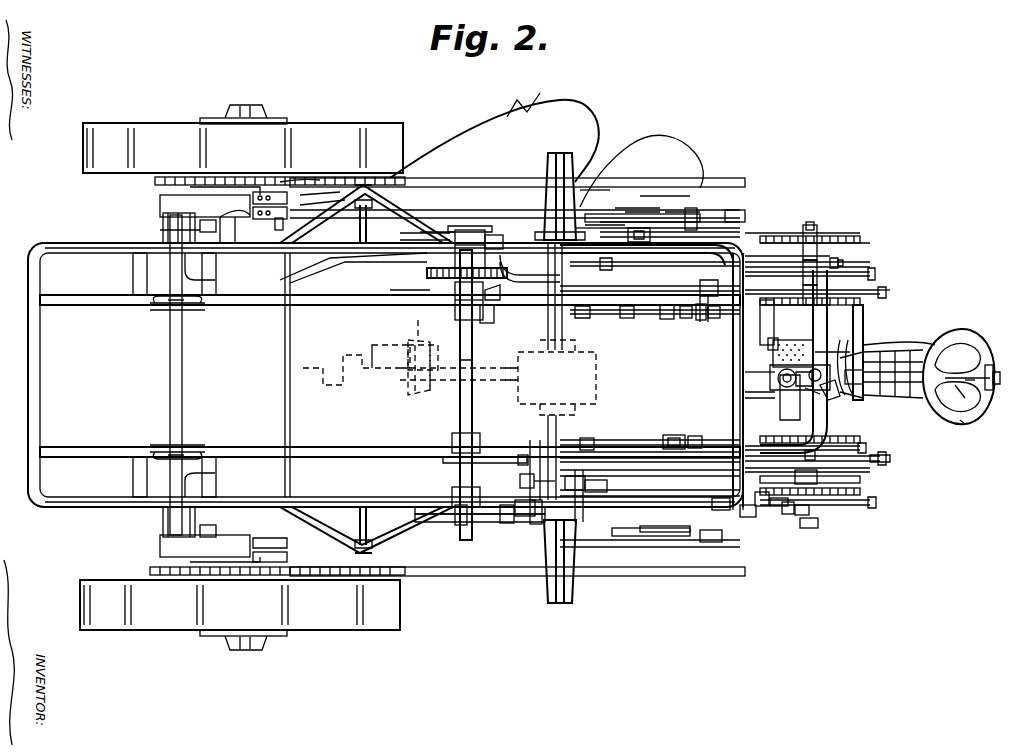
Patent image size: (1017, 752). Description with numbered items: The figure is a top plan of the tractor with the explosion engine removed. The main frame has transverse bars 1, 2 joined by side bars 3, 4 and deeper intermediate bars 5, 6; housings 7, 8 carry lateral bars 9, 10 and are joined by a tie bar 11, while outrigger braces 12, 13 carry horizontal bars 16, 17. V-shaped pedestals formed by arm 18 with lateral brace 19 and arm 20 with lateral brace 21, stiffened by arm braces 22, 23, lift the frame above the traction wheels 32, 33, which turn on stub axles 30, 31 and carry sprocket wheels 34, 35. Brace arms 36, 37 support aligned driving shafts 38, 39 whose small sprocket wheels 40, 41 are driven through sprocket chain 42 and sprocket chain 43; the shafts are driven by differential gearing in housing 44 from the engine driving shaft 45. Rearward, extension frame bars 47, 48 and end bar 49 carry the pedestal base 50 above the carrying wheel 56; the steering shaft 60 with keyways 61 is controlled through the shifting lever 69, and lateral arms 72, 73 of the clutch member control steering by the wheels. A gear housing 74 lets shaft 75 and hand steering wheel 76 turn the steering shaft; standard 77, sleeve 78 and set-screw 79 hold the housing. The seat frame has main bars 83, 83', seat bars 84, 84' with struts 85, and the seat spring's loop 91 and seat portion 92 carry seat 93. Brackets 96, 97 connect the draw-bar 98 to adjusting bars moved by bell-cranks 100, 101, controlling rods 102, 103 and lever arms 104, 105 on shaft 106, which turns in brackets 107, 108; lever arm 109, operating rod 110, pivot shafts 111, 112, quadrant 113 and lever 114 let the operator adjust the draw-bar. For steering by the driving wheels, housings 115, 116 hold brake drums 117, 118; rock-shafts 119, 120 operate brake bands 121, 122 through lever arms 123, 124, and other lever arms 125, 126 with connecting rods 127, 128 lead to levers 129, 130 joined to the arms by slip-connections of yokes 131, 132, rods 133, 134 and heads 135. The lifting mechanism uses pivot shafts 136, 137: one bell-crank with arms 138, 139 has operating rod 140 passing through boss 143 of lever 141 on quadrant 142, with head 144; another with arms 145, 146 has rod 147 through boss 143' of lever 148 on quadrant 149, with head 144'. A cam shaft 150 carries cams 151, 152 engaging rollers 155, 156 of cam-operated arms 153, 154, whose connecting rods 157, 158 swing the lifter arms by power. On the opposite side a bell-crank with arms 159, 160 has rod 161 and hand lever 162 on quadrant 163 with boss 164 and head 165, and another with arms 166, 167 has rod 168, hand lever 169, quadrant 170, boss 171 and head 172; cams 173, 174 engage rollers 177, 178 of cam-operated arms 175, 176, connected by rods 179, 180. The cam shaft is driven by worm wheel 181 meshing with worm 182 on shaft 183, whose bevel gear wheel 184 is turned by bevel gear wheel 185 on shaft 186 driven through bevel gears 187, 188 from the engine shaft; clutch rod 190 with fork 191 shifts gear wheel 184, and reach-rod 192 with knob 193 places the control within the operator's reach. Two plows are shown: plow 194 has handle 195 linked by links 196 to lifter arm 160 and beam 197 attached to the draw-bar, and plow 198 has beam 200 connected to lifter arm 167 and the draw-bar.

The transverse bar 1 is at (30, 380).
The transverse bar 2 is at (800, 368).
The side bar 3 is at (104, 246).
The side bar 4 is at (104, 508).
The intermediate bar 5 is at (112, 306).
The intermediate bar 6 is at (112, 447).
The housing 7 is at (133, 273).
The housing 8 is at (133, 478).
The lateral bar 9 is at (163, 226).
The lateral bar 10 is at (163, 527).
The tie bar 11 is at (170, 380).
The outrigger brace 12 is at (300, 233).
The outrigger brace 13 is at (395, 545).
The horizontal bar 16 is at (360, 225).
The horizontal bar 17 is at (360, 520).
The pedestal arm 18 is at (230, 192).
The lateral brace 19 is at (195, 267).
The pedestal arm 20 is at (195, 565).
The lateral brace 21 is at (195, 483).
The arm brace 22 is at (320, 200).
The arm brace 23 is at (300, 555).
The stub axle 30 is at (235, 185).
The stub axle 31 is at (240, 565).
The traction wheel 32 is at (83, 152).
The traction wheel 33 is at (112, 630).
The sprocket wheel 34 is at (190, 180).
The sprocket wheel 35 is at (180, 580).
The brace arm 36 is at (575, 165).
The brace arm 37 is at (576, 584).
The driving shaft 38 is at (552, 325).
The driving shaft 39 is at (548, 433).
The small sprocket wheel 40 is at (595, 185).
The small sprocket wheel 41 is at (578, 522).
The sprocket chain 42 is at (427, 178).
The sprocket chain 43 is at (427, 576).
The housing 44 is at (596, 376).
The driving shaft 45 is at (387, 385).
The extension frame bar 47 is at (795, 340).
The extension frame bar 48 is at (800, 420).
The transverse end bar 49 is at (828, 398).
The pedestal base 50 is at (796, 378).
The carrying wheel 56 is at (895, 355).
The steering shaft 60 is at (778, 378).
The keyways 61 is at (810, 382).
The shifting and controlling lever 69 is at (860, 402).
The lateral arm 72 is at (790, 330).
The lateral arm 73 is at (785, 420).
The gear housing 74 is at (770, 345).
The shaft 75 is at (845, 380).
The steering wheel 76 is at (862, 325).
The standard 77 is at (865, 352).
The sleeve 78 is at (925, 340).
The set-screw 79 is at (820, 392).
The main bar 83 is at (906, 358).
The main bar 83' is at (883, 395).
The seat bar 84 is at (968, 370).
The seat bar 84' is at (987, 429).
The spacing struts 85 is at (998, 375).
The loop 91 is at (985, 365).
The seat portion 92 is at (960, 400).
The seat 93 is at (970, 424).
The bracket 96 is at (270, 228).
The bracket 97 is at (270, 558).
The draw-bar 98 is at (283, 368).
The bell-crank 100 is at (200, 530).
The bell-crank 101 is at (160, 200).
The controlling rod 102 is at (210, 550).
The controlling rod 103 is at (215, 226).
The lever arm 104 is at (720, 510).
The lever arm 105 is at (735, 210).
The shaft 106 is at (760, 372).
The bracket 107 is at (775, 240).
The bracket 108 is at (762, 505).
The lever arm 109 is at (748, 520).
The operating rod 110 is at (780, 505).
The pivot shaft 111 is at (830, 258).
The pivot shaft 112 is at (830, 480).
The quadrant 113 is at (830, 472).
The lever 114 is at (810, 455).
The housing 115 is at (605, 265).
The housing 116 is at (525, 481).
The brake drum 117 is at (585, 225).
The brake drum 118 is at (540, 470).
The rock-shaft 119 is at (590, 215).
The rock-shaft 120 is at (575, 490).
The brake band 121 is at (490, 326).
The brake band 122 is at (535, 522).
The lever arm 123 is at (620, 215).
The lever arm 124 is at (590, 545).
The lever arm 125 is at (640, 320).
The lever arm 126 is at (585, 440).
The connecting rod 127 is at (618, 312).
The connecting rod 128 is at (600, 458).
The lever 129 is at (668, 322).
The lever 130 is at (675, 442).
The yoke 131 is at (695, 322).
The yoke 132 is at (698, 442).
The rod 133 is at (715, 325).
The rod 134 is at (740, 395).
The head 135 is at (700, 322).
The pivot shaft 136 is at (710, 545).
The pivot shaft 137 is at (690, 212).
The arm 138 is at (640, 535).
The arm 139 is at (660, 540).
The operating rod 140 is at (790, 512).
The lever 141 is at (805, 515).
The quadrant 142 is at (820, 496).
The boss 143 is at (833, 532).
The boss 143' is at (778, 475).
The head 144 is at (841, 527).
The head 144' is at (905, 466).
The arm 145 is at (738, 515).
The arm 146 is at (690, 490).
The rod 147 is at (880, 462).
The lever 148 is at (860, 450).
The quadrant 149 is at (840, 440).
The cam shaft 150 is at (460, 408).
The cam 151 is at (420, 514).
The cam 152 is at (455, 462).
The cam-operated arm 153 is at (460, 522).
The cam-operated arm 154 is at (508, 522).
The roller 155 is at (452, 497).
The roller 156 is at (522, 458).
The connecting rod 157 is at (520, 522).
The connecting rod 158 is at (650, 440).
The arm 159 is at (640, 232).
The arm 160 is at (660, 200).
The rod 161 is at (790, 240).
The lever 162 is at (815, 240).
The quadrant 163 is at (860, 240).
The boss 164 is at (810, 228).
The head 165 is at (820, 228).
The arm 166 is at (745, 272).
The arm 167 is at (650, 262).
The rod 168 is at (850, 290).
The hand lever 169 is at (850, 300).
The quadrant 170 is at (830, 302).
The boss 171 is at (815, 274).
The head 172 is at (890, 292).
The cam 173 is at (420, 232).
The cam 174 is at (458, 312).
The cam-operated arm 175 is at (455, 228).
The cam-operated arm 176 is at (498, 298).
The roller 177 is at (470, 228).
The roller 178 is at (487, 340).
The rod 179 is at (500, 262).
The rod 180 is at (590, 312).
The worm wheel 181 is at (427, 272).
The worm 182 is at (430, 345).
The shaft 183 is at (510, 260).
The bevel gear wheel 184 is at (400, 285).
The bevel gear wheel 185 is at (395, 290).
The shaft 186 is at (418, 322).
The bevel gear 187 is at (418, 345).
The bevel gear 188 is at (410, 395).
The clutch rod 190 is at (545, 230).
The fork 191 is at (445, 235).
The reach-rod 192 is at (840, 262).
The knob 193 is at (845, 265).
The plow 194 is at (535, 102).
The handle 195 is at (600, 190).
The links 196 is at (635, 215).
The beam 197 is at (290, 190).
The plow 198 is at (670, 215).
The beam 200 is at (290, 265).